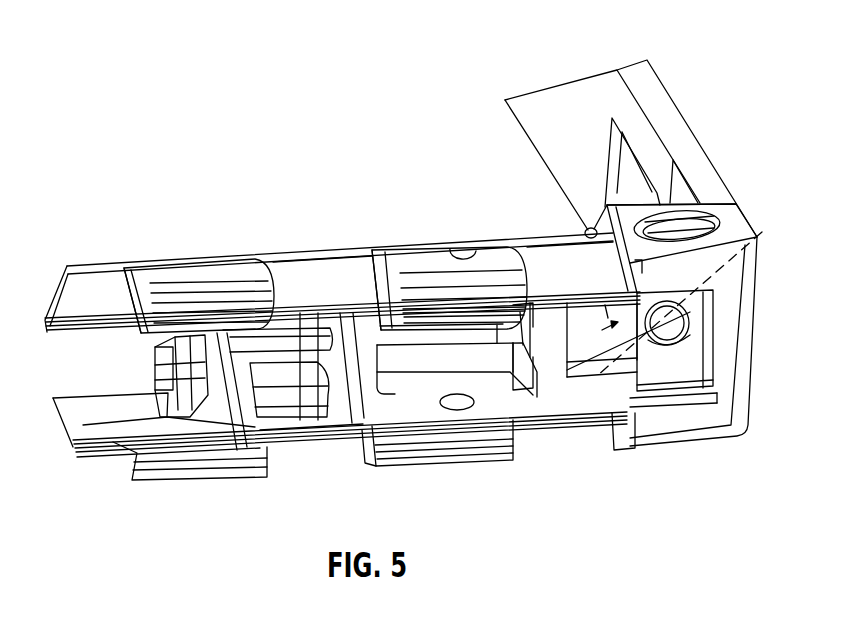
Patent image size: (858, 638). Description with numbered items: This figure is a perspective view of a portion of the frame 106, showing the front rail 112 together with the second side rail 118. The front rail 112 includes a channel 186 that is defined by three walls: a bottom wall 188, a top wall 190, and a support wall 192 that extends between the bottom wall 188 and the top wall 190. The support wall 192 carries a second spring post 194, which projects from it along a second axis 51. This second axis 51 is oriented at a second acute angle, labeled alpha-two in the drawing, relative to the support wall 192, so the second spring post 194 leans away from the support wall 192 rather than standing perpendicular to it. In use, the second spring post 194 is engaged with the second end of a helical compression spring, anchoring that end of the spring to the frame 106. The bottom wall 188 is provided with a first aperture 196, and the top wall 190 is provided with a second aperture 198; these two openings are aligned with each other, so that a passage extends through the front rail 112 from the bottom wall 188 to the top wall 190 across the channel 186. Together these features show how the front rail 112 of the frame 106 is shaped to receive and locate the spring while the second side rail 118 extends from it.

The frame 106 is at (207, 101).
The front rail 112 is at (215, 253).
The second side rail 118 is at (527, 114).
The second aperture 198 is at (463, 252).
The top wall 190 is at (557, 263).
The support wall 192 is at (556, 358).
The channel 186 is at (498, 395).
The first aperture 196 is at (463, 403).
The bottom wall 188 is at (400, 423).
The second axis 51 is at (771, 224).
The second spring post 194 is at (688, 325).